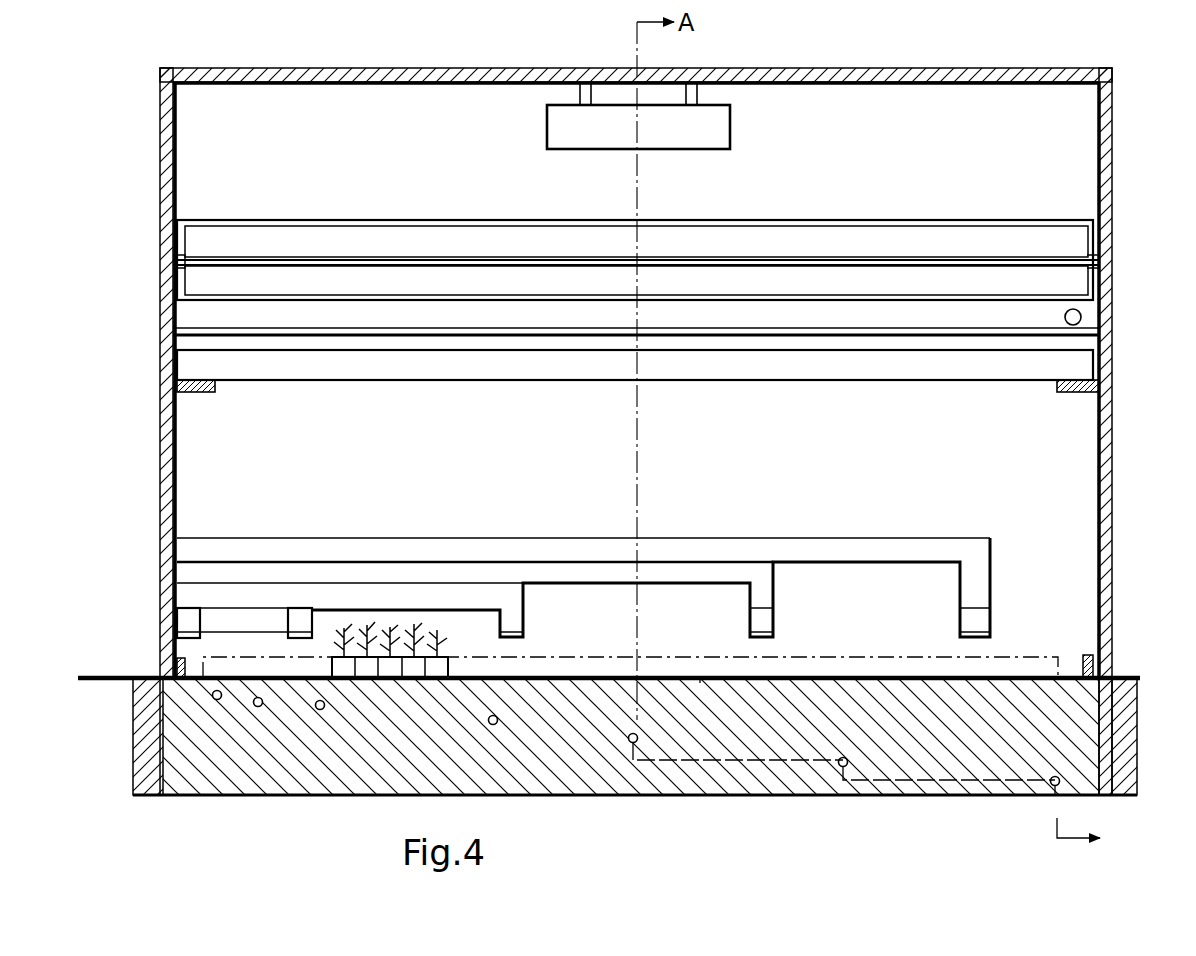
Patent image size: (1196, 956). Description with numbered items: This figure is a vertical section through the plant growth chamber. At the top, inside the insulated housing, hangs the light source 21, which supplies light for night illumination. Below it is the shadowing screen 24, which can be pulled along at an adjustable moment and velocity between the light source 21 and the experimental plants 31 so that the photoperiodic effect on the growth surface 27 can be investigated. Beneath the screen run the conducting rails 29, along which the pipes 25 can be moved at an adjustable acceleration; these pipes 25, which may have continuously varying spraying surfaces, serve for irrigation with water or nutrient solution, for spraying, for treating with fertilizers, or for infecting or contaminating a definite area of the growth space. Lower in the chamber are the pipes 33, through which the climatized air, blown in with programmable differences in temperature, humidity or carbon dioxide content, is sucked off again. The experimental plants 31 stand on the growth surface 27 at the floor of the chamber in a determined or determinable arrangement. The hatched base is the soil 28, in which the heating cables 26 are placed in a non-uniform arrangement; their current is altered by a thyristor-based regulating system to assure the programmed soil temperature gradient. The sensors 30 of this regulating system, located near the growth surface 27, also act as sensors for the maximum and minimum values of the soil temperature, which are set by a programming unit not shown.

The light source 21 is at (698, 118).
The shadowing screen 24 is at (1070, 242).
The pipes 25 is at (1071, 362).
The heating cables 26 is at (840, 762).
The growth surface 27 is at (700, 680).
The soil 28 is at (1070, 733).
The conducting rails 29 is at (203, 384).
The sensors 30 is at (137, 681).
The experimental plants 31 is at (343, 671).
The pipes 33 is at (232, 622).